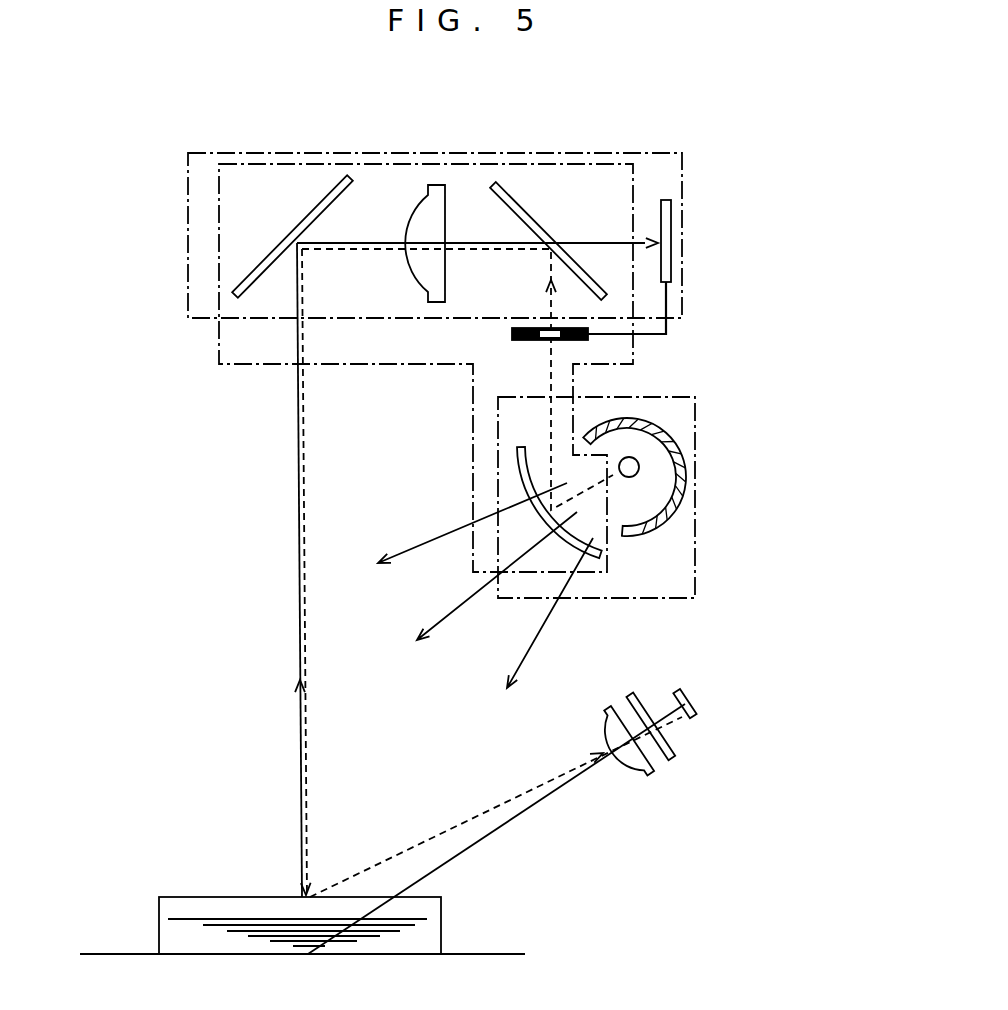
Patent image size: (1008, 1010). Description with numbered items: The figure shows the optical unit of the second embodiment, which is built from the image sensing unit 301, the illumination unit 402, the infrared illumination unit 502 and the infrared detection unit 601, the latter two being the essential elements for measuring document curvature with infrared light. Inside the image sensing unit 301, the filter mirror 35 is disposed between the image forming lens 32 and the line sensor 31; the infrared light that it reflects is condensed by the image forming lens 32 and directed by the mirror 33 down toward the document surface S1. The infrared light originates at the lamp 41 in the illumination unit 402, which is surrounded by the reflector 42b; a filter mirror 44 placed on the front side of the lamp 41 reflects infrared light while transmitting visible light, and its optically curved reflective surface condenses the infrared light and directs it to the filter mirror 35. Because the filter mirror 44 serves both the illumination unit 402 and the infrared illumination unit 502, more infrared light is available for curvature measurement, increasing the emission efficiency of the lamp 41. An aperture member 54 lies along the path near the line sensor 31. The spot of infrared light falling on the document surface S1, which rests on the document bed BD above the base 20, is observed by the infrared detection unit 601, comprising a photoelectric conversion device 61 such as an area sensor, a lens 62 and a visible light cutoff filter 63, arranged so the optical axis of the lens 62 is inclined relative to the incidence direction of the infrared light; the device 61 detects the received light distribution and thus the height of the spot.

The image sensing unit 301 is at (625, 153).
The infrared illumination unit 502 is at (340, 364).
The illumination unit 402 is at (672, 598).
The mirror 33 is at (332, 185).
The image forming lens 32 is at (437, 185).
The filter mirror 35 is at (517, 200).
The line sensor 31 is at (672, 242).
The slit plate 54 is at (587, 337).
The filter mirror 44 is at (523, 478).
The reflector 42b is at (673, 442).
The lamp 41 is at (640, 473).
The infrared detection unit 601 is at (646, 739).
The photoelectric conversion device 61 is at (697, 715).
The lens 62 is at (610, 718).
The visible light cutoff filter 63 is at (632, 692).
The document surface S1 is at (215, 897).
The sample container BD is at (159, 937).
The base 20 is at (483, 953).